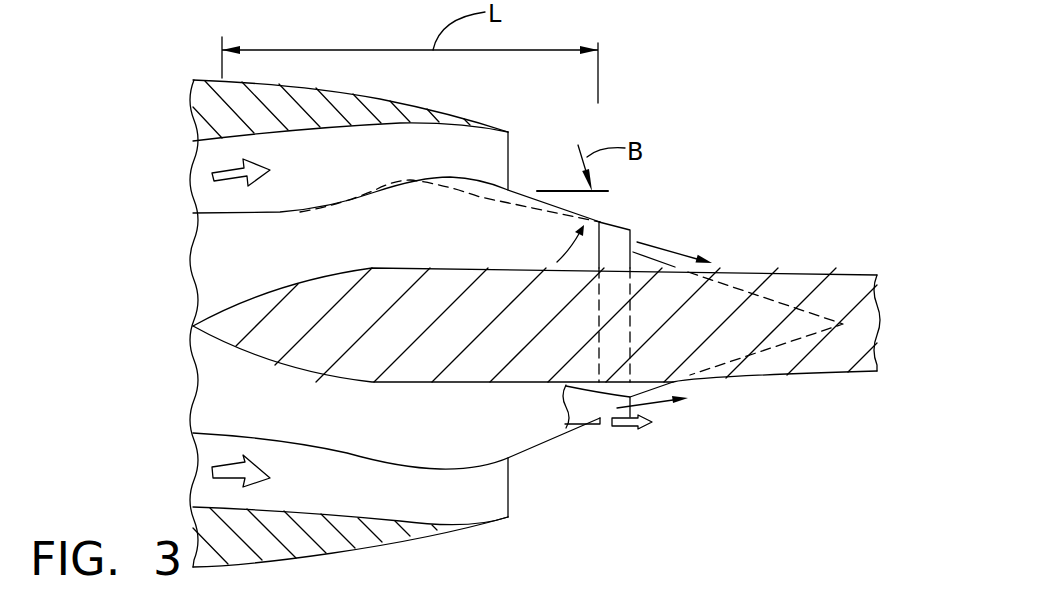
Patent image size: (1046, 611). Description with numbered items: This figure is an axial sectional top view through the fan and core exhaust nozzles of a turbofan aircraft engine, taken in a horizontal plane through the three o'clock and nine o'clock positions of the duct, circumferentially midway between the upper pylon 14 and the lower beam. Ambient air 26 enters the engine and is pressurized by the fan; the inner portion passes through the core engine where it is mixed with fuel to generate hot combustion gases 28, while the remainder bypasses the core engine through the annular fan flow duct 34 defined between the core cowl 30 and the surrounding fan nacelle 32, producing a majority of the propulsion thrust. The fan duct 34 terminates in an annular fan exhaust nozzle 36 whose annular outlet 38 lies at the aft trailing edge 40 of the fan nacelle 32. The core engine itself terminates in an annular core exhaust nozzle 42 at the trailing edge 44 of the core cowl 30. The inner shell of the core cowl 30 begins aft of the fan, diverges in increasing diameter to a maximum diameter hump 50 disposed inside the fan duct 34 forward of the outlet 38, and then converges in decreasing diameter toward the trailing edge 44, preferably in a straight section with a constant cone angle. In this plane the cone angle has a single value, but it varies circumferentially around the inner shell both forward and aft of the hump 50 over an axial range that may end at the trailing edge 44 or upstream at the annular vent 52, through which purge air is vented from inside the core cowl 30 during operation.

The pylon 14 is at (480, 331).
The ambient air 26 is at (266, 470).
The hot combustion gases 28 is at (666, 249).
The core cowl 30 is at (300, 259).
The fan nacelle 32 is at (390, 521).
The fan flow duct 34 is at (340, 176).
The fan exhaust nozzle 36 is at (513, 487).
The fan outlet 38 is at (509, 150).
The trailing edge of fan nacelle 40 is at (511, 130).
The core exhaust nozzle 42 is at (672, 412).
The trailing edge of core cowl 44 is at (633, 231).
The maximum diameter hump 50 is at (452, 177).
The annular vent 52 is at (601, 221).